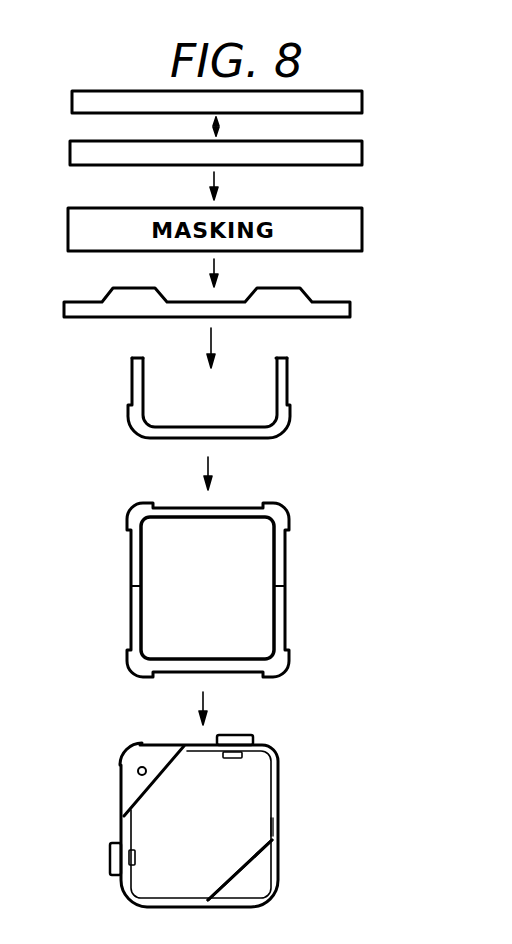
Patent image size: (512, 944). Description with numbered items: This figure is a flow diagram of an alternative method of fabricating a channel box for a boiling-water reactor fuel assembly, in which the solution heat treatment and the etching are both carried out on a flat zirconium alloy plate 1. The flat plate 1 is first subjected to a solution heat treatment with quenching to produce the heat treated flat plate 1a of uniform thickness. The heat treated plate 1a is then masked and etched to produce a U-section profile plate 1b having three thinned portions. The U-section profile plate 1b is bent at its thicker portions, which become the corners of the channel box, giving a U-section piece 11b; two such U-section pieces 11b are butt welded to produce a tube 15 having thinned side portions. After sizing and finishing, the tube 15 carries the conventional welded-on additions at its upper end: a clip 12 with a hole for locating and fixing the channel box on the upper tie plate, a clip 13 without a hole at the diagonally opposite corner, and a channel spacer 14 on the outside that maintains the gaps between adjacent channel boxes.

The flat zirconium alloy plate 1 is at (362, 107).
The heat treated flat plate 1a is at (362, 152).
The U-section profile plate 1b is at (350, 311).
The U-section piece 11b is at (287, 405).
The tube 15 is at (285, 602).
The clip with a hole 12 is at (120, 765).
The clip without a hole 13 is at (252, 868).
The channel spacer 14 is at (110, 860).